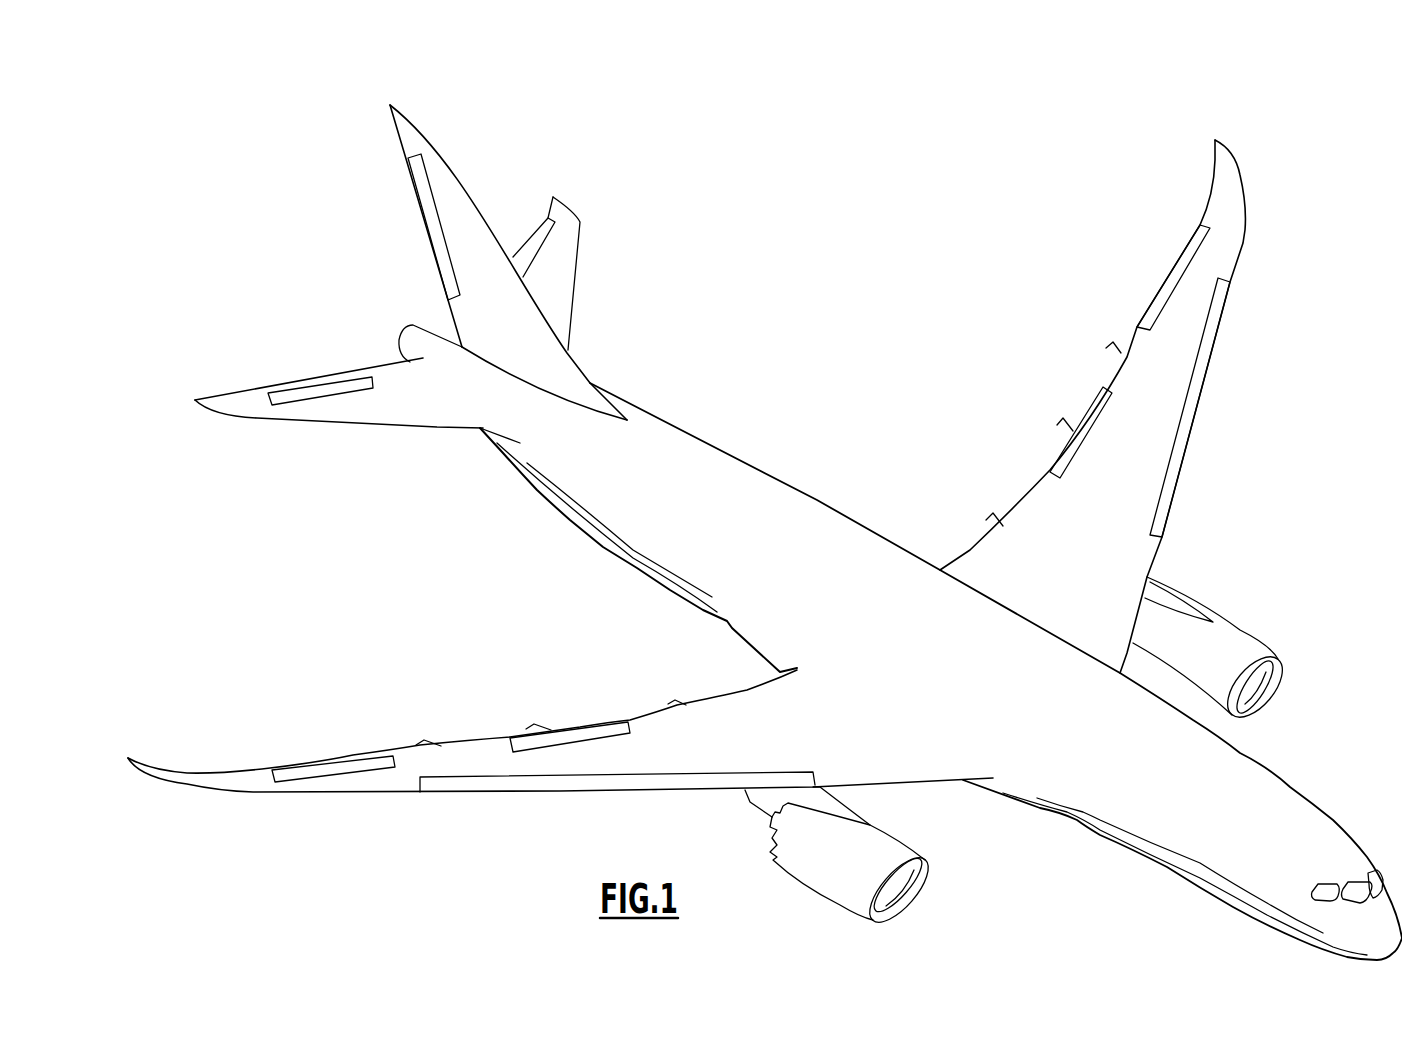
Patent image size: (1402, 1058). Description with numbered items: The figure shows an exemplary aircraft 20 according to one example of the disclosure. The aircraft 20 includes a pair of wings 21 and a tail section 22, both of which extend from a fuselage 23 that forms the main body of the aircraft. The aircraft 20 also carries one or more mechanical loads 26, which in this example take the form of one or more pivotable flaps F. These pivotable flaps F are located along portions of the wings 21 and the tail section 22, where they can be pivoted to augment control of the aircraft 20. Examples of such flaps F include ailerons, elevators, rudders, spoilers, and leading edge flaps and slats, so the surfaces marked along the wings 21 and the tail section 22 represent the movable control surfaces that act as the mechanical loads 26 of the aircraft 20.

The aircraft 20 is at (765, 499).
The wings 21 is at (377, 800).
The tail section 22 is at (505, 191).
The fuselage 23 is at (823, 500).
The mechanical loads 26 is at (328, 397).
The pivotable flaps F is at (424, 222).